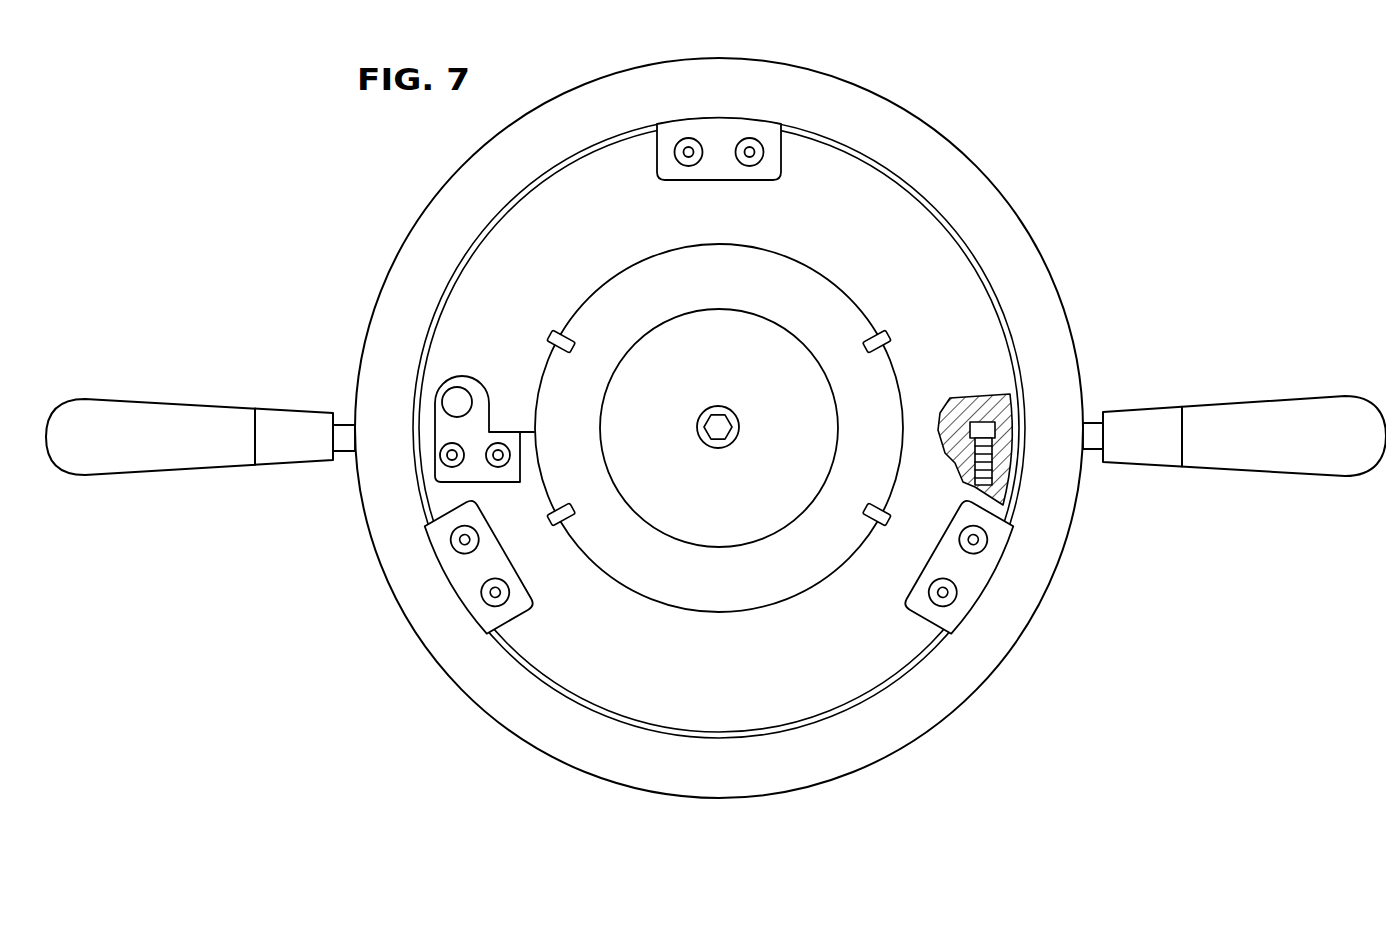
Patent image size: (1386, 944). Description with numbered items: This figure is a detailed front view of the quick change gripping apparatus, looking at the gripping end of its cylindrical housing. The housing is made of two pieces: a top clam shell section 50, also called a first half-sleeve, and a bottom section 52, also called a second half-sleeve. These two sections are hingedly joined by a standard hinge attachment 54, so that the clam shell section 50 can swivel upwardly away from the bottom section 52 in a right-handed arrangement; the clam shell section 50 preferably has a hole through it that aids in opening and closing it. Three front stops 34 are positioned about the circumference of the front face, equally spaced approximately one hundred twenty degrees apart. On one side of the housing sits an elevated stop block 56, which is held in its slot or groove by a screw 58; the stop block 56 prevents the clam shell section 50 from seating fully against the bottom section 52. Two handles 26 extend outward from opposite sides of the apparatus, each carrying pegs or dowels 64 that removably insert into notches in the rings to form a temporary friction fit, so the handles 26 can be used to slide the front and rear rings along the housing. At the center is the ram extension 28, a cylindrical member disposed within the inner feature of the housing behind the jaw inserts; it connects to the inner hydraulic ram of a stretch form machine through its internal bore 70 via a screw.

The handle 26 is at (128, 478).
The ram extension 28 is at (780, 497).
The front stop 34 is at (714, 124).
The clam shell section 50 is at (593, 251).
The bottom section 52 is at (428, 435).
The hinge attachment 54 is at (442, 425).
The elevated stop block 56 is at (1036, 431).
The screw 58 is at (987, 463).
The peg 64 is at (347, 452).
The internal bore 70 is at (706, 441).